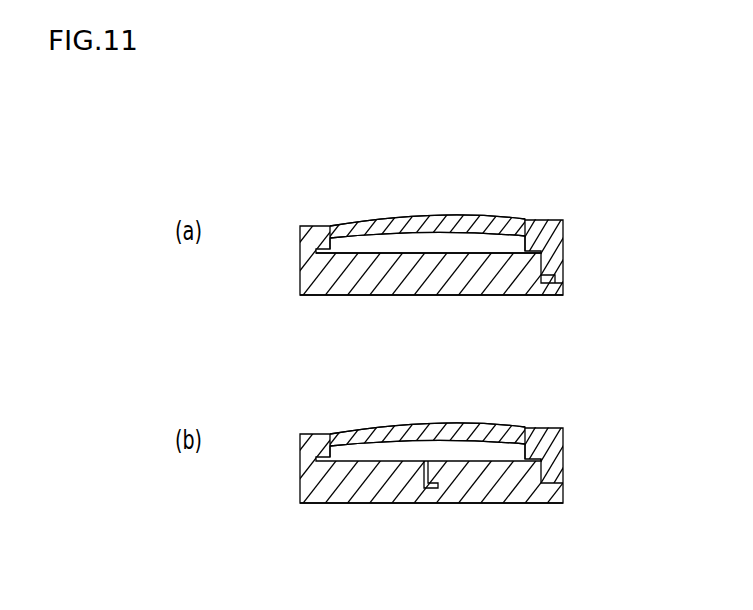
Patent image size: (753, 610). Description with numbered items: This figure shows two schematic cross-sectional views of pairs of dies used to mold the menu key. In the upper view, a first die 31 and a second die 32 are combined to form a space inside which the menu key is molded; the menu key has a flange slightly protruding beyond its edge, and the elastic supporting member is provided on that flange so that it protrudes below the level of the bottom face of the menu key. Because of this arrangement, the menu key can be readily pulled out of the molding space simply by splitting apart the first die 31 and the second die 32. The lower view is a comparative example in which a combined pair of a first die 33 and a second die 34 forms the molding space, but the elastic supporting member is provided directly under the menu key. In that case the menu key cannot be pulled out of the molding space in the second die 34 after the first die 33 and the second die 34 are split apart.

The first die 31 is at (565, 226).
The second die 32 is at (510, 296).
The first die 33 is at (474, 464).
The second die 34 is at (435, 466).